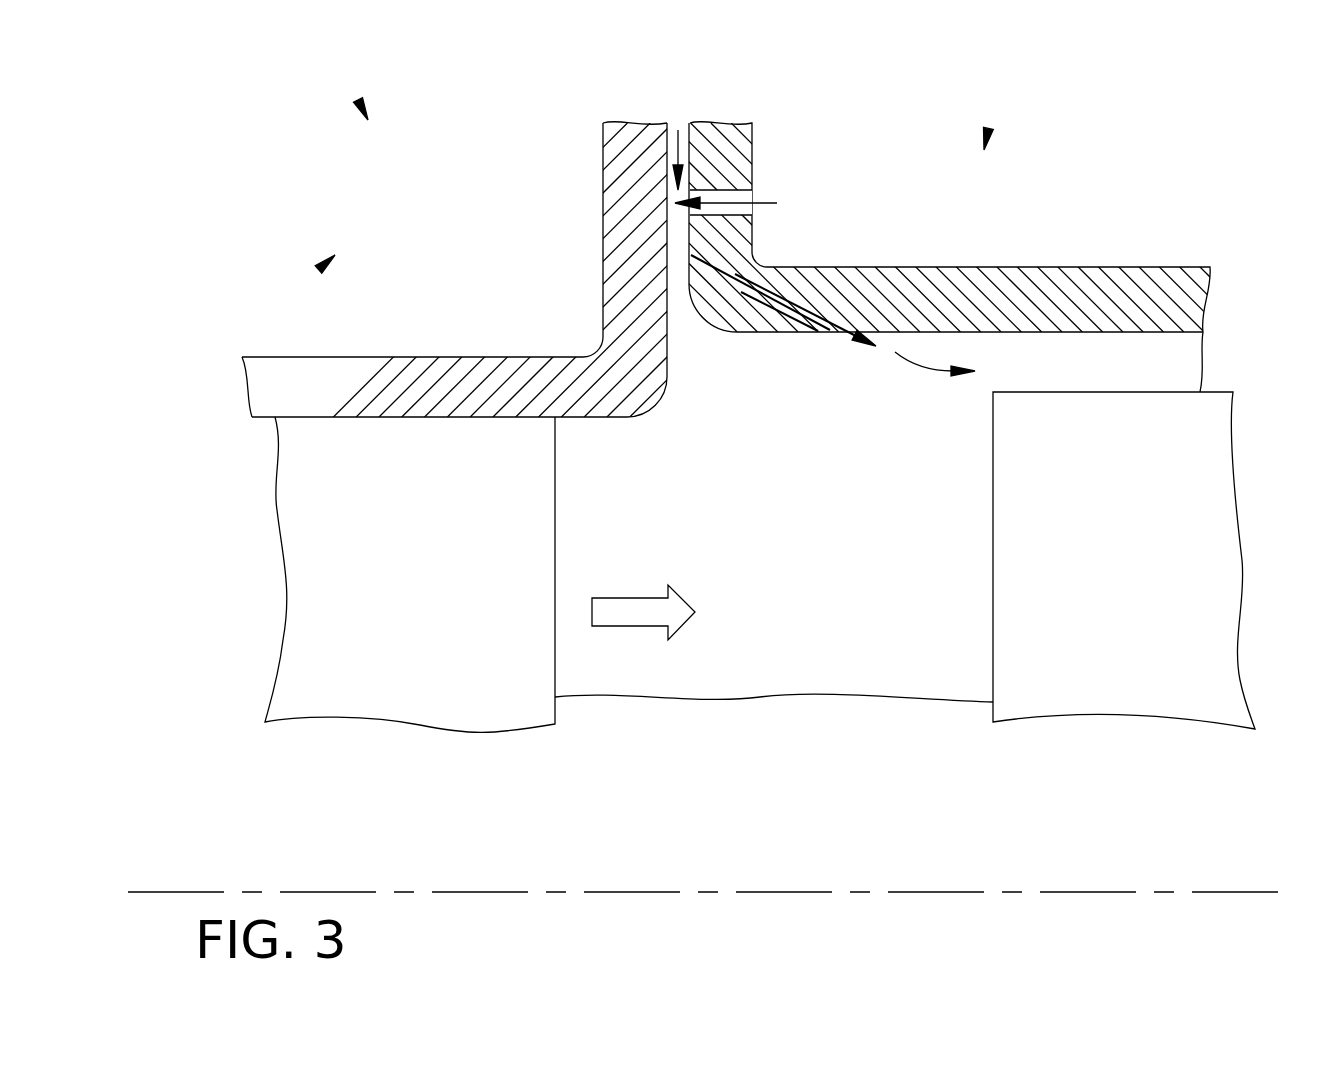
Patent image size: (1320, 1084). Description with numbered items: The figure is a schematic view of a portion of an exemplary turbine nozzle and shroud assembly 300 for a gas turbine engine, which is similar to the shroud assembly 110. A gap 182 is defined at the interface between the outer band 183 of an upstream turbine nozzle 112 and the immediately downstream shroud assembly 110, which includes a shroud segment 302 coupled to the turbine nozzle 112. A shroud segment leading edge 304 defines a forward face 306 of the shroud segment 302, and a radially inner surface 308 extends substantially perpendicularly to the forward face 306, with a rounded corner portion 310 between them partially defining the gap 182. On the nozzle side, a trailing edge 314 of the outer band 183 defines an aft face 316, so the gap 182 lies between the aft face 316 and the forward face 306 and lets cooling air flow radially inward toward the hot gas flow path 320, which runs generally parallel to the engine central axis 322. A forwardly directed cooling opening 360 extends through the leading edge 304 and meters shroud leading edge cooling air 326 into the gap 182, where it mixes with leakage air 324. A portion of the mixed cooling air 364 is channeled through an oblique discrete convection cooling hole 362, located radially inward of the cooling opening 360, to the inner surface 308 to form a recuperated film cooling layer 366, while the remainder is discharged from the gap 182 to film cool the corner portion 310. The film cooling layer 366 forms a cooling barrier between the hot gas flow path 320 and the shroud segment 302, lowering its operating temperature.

The turbine nozzle and shroud assembly 300 is at (360, 104).
The shroud assembly 110 is at (986, 132).
The turbine nozzle 112 is at (320, 268).
The trailing edge 314 is at (612, 152).
The aft face 316 is at (677, 123).
The forward face 306 is at (688, 130).
The shroud segment leading edge 304 is at (745, 131).
The leakage air 324 is at (690, 149).
The cooling opening 360 is at (753, 190).
The shroud leading edge cooling air 326 is at (777, 203).
The mixed cooling air 364 is at (690, 258).
The convection cooling hole 362 is at (815, 312).
The shroud segment 302 is at (978, 278).
The radially inner surface 308 is at (765, 335).
The corner portion 310 is at (702, 322).
The film cooling layer 366 is at (920, 370).
The outer band 183 is at (388, 410).
The gap 182 is at (681, 290).
The hot gas flow path 320 is at (637, 597).
The central axis 322 is at (1090, 892).